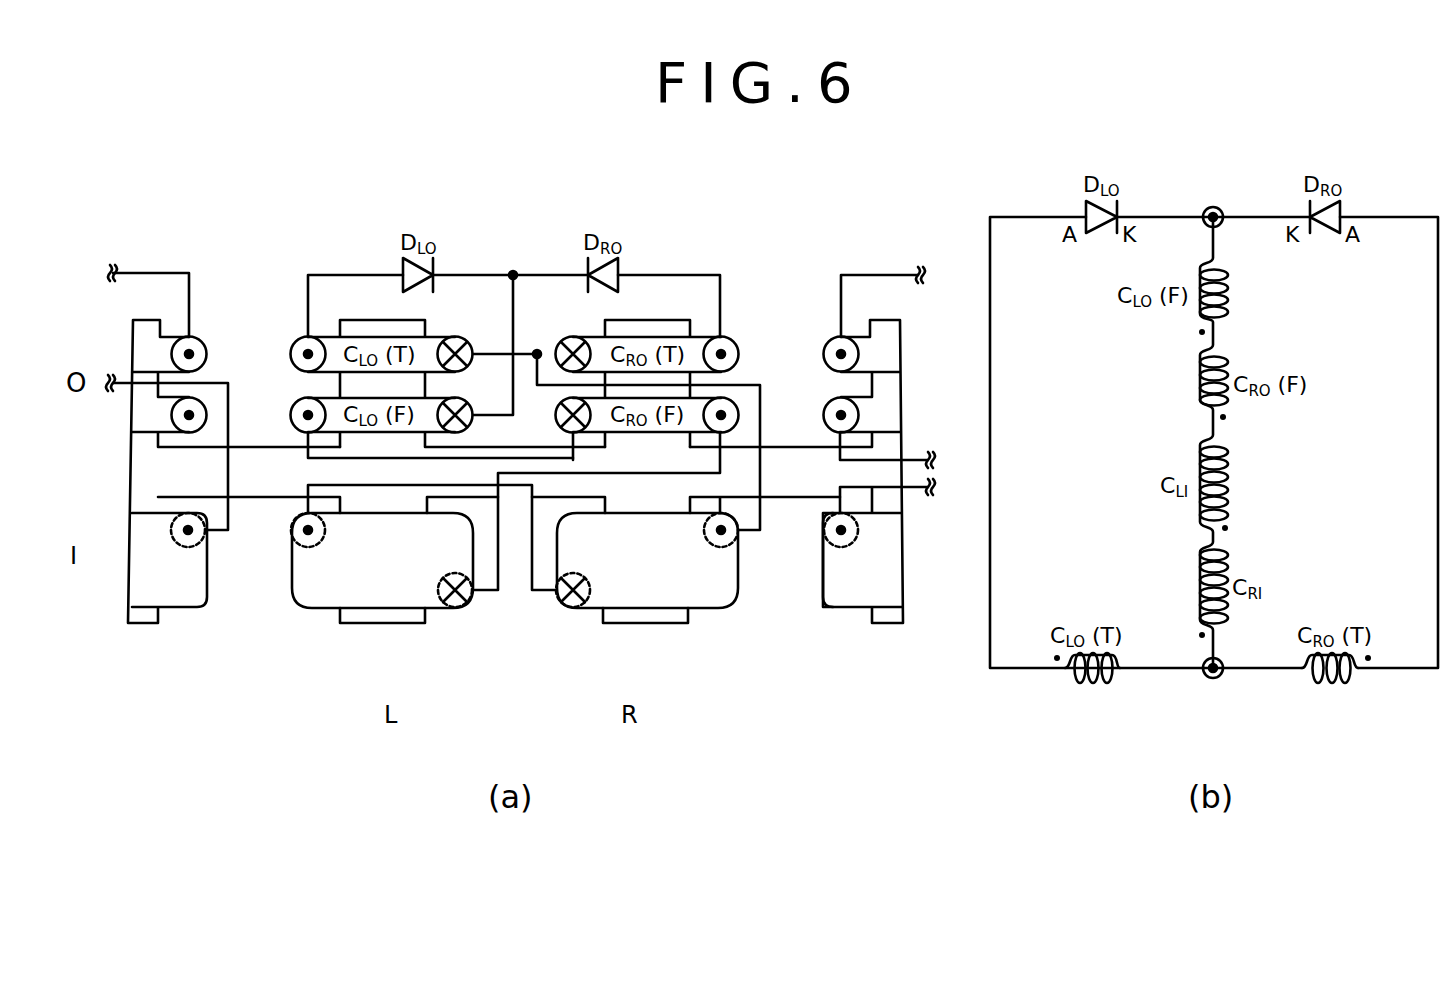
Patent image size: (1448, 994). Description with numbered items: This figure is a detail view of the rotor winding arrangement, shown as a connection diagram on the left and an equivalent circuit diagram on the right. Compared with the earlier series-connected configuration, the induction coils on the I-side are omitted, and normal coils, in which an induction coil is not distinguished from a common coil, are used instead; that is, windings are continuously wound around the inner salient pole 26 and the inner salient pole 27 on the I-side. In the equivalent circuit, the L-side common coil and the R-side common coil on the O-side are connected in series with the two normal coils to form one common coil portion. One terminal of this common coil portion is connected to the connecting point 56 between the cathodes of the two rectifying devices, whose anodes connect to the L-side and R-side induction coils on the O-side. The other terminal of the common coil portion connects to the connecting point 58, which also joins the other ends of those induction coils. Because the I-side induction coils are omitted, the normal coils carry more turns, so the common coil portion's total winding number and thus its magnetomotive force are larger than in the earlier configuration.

The inner salient pole 26 is at (360, 614).
The inner salient pole 27 is at (665, 614).
The connecting point 56 is at (1213, 207).
The connecting point 58 is at (1213, 678).